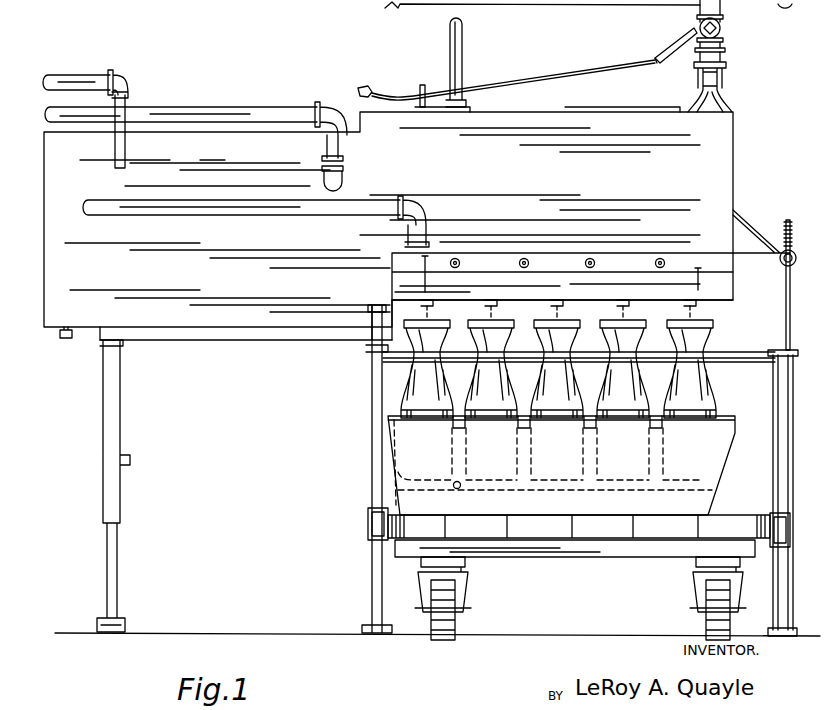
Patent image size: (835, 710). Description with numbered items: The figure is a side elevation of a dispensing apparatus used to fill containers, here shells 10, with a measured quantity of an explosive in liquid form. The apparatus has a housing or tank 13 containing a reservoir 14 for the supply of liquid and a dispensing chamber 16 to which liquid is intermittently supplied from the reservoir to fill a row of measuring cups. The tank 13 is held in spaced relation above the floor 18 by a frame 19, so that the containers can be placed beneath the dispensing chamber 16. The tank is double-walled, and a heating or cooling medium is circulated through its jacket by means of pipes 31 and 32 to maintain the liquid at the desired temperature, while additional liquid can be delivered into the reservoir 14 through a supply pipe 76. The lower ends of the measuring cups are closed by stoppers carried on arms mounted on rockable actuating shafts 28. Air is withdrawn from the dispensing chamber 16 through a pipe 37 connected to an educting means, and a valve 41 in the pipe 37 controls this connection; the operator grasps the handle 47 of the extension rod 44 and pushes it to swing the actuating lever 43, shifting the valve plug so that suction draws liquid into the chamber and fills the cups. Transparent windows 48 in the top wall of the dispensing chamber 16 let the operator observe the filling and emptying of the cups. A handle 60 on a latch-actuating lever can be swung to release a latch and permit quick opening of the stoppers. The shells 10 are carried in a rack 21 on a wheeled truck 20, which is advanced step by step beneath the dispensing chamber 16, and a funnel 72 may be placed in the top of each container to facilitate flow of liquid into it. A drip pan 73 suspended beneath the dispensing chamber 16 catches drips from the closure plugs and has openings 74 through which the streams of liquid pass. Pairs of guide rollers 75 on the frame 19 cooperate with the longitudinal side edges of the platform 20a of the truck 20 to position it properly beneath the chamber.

The shells 10 is at (712, 395).
The tank 13 is at (232, 132).
The reservoir 14 is at (275, 320).
The dispensing chamber 16 is at (722, 163).
The floor 18 is at (150, 630).
The frame 19 is at (113, 407).
The wheeled truck 20 is at (544, 547).
The platform 20a is at (702, 522).
The rack 21 is at (705, 462).
The actuating shafts 28 is at (462, 255).
The pipe 31 is at (207, 214).
The pipe 32 is at (178, 108).
The pipe 37 is at (722, 78).
The valve 41 is at (722, 30).
The actuating lever 43 is at (688, 42).
The extension rod 44 is at (470, 81).
The handle 47 is at (370, 90).
The windows 48 is at (606, 110).
The handle 60 is at (463, 36).
The funnel 72 is at (712, 341).
The drip pan 73 is at (725, 294).
The openings 74 is at (697, 304).
The guide rollers 75 is at (370, 525).
The supply pipe 76 is at (80, 82).